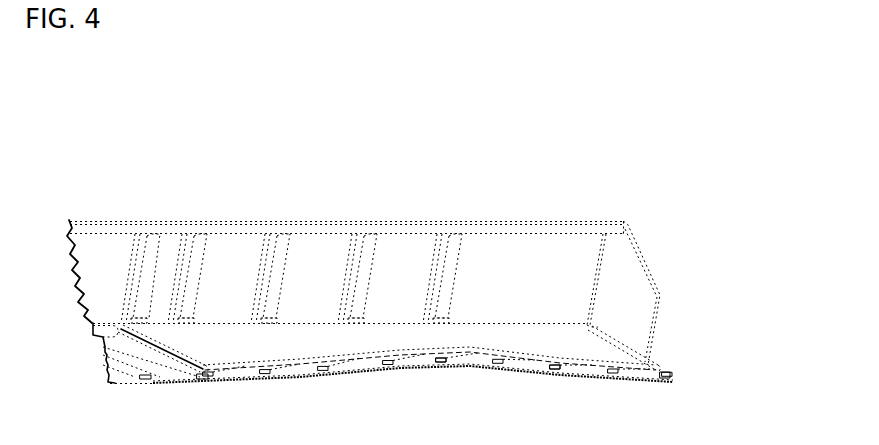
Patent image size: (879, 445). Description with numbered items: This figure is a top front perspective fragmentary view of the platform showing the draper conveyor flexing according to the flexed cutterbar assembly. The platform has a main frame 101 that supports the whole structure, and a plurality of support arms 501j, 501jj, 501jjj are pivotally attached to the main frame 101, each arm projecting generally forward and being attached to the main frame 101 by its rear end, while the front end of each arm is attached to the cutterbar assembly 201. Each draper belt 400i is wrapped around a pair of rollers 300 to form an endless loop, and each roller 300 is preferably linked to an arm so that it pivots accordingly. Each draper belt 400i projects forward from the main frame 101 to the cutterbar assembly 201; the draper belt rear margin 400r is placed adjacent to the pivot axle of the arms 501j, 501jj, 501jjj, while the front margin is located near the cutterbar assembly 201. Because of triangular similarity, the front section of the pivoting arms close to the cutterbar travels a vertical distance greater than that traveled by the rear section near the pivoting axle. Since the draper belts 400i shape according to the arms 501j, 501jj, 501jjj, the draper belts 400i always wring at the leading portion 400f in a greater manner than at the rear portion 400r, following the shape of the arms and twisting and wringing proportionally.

The main frame 101 is at (238, 226).
The roller 300 is at (206, 366).
The draper belt 400i is at (410, 335).
The draper belt rear margin 400r is at (494, 324).
The leading portion 400f is at (610, 358).
The support arm 501j is at (311, 366).
The support arm 501jj is at (452, 346).
The support arm 501jjj is at (545, 363).
The cutterbar assembly 201 is at (385, 372).